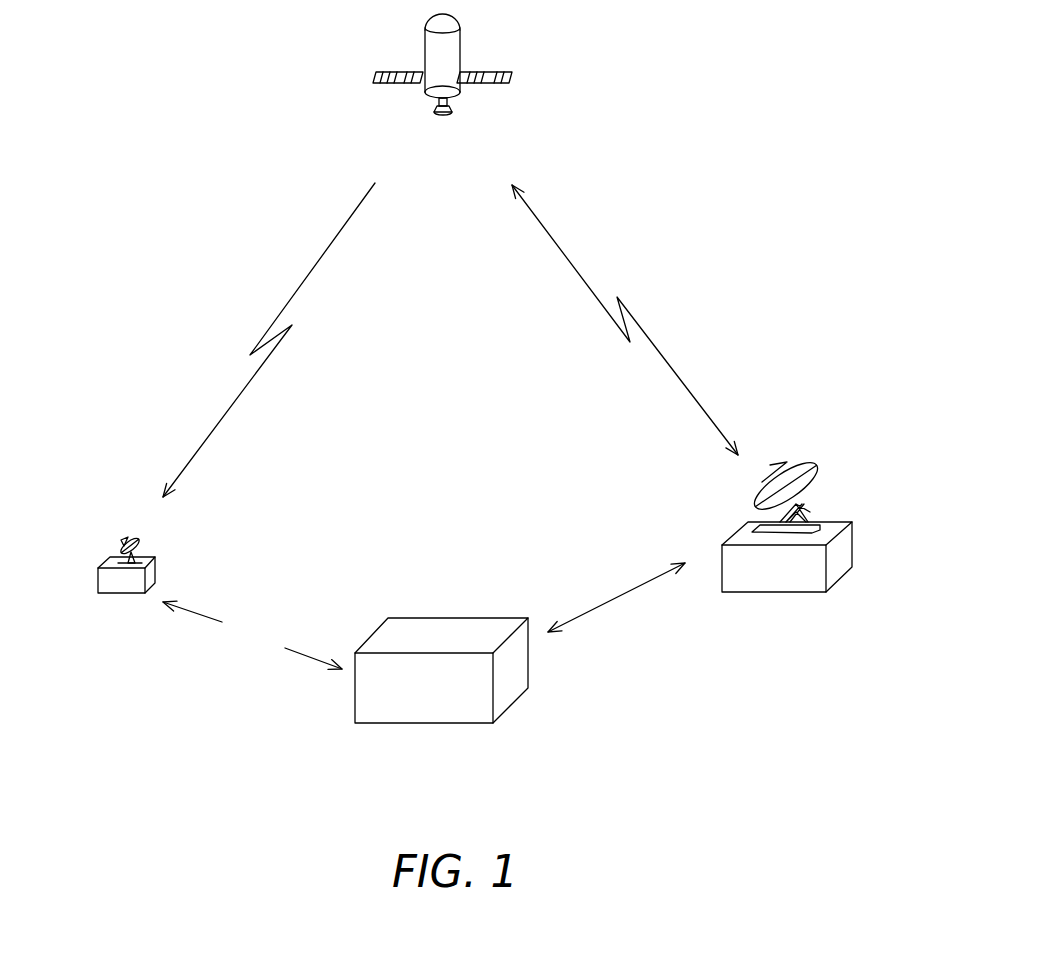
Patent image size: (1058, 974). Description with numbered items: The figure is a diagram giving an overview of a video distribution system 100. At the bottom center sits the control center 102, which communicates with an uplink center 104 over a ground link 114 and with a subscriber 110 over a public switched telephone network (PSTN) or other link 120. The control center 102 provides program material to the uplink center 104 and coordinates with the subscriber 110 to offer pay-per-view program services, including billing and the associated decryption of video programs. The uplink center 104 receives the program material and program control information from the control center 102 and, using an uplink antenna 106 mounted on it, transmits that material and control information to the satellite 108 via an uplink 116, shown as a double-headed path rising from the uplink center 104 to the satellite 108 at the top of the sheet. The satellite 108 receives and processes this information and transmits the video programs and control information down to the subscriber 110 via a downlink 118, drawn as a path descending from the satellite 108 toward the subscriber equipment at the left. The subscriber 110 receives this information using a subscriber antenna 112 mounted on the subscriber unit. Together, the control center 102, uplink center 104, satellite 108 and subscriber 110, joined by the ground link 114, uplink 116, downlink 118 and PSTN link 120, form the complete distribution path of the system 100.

The video distribution system 100 is at (730, 176).
The control center 102 is at (510, 705).
The uplink center 104 is at (773, 593).
The uplink antenna 106 is at (815, 472).
The satellite 108 is at (488, 85).
The subscriber 110 is at (165, 566).
The subscriber antenna 112 is at (128, 540).
The ground link 114 is at (612, 597).
The uplink 116 is at (665, 355).
The downlink 118 is at (315, 268).
The public switched telephone network (PSTN) or other link 120 is at (283, 607).